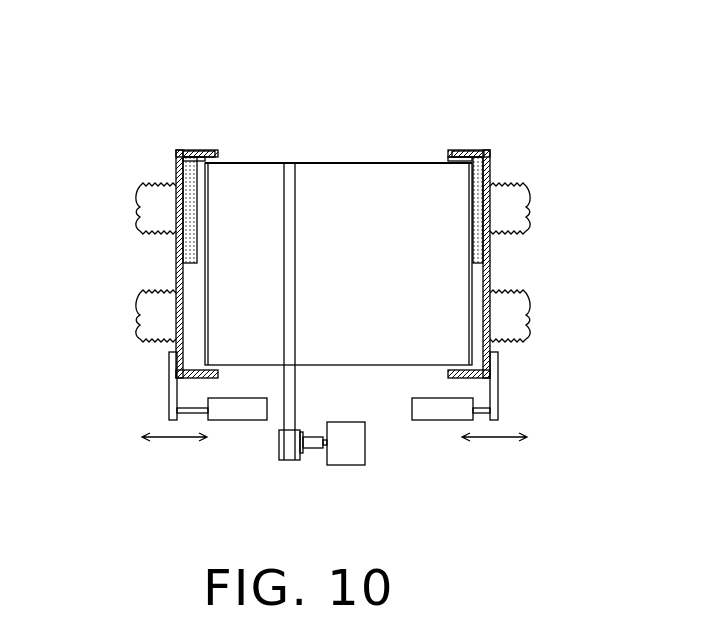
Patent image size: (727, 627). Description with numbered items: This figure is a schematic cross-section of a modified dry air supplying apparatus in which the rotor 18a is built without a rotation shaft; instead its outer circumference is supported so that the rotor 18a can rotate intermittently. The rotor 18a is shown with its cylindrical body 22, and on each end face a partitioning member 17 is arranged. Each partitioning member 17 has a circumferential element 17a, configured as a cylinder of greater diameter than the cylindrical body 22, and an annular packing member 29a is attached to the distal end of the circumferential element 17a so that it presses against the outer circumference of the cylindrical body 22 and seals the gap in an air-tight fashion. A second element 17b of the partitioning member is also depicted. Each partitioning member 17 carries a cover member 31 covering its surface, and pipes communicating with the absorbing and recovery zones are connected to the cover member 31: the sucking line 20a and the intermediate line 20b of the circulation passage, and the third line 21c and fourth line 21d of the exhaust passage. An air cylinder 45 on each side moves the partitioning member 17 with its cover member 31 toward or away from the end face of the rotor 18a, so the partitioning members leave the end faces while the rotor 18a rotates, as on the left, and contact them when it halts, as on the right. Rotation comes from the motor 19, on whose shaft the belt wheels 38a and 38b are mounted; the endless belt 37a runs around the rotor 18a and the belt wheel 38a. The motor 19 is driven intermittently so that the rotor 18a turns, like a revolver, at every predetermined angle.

The partitioning member 17 is at (383, 196).
The circumferential element 17a is at (283, 63).
The frame member 17b is at (217, 150).
The rotor 18a is at (351, 157).
The cylindrical body 22 is at (325, 180).
The annular packing member 29a is at (218, 158).
The fourth line 21d is at (138, 212).
The third line 21c is at (532, 208).
The cover member 31 is at (180, 270).
The sucking line 20a is at (138, 320).
The intermediate line 20b is at (532, 318).
The endless belt 37a is at (297, 388).
The air cylinder 45 is at (230, 421).
The belt wheel 38a is at (280, 460).
The belt wheel 38b is at (313, 452).
The motor 19 is at (359, 465).